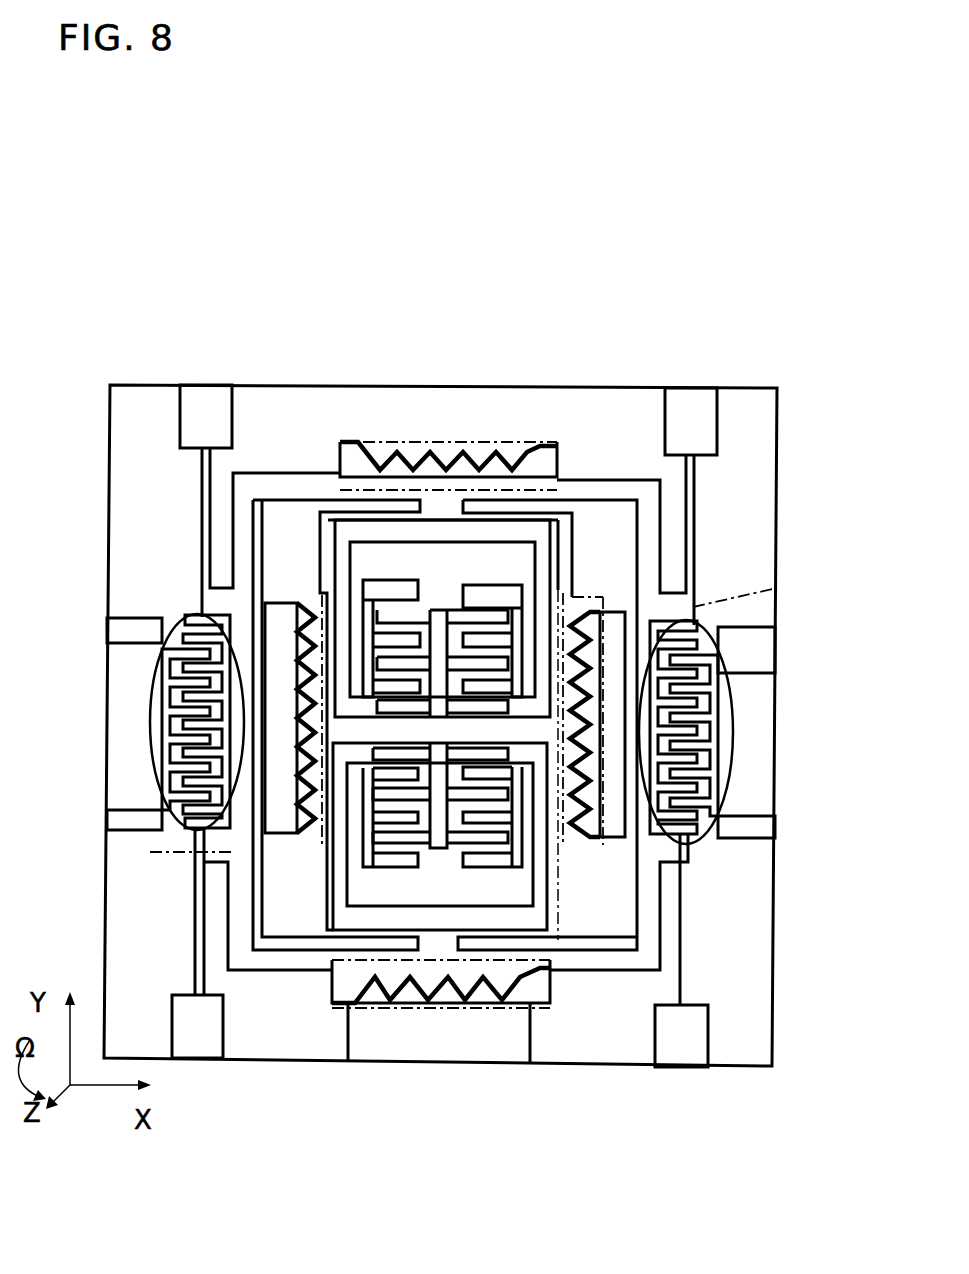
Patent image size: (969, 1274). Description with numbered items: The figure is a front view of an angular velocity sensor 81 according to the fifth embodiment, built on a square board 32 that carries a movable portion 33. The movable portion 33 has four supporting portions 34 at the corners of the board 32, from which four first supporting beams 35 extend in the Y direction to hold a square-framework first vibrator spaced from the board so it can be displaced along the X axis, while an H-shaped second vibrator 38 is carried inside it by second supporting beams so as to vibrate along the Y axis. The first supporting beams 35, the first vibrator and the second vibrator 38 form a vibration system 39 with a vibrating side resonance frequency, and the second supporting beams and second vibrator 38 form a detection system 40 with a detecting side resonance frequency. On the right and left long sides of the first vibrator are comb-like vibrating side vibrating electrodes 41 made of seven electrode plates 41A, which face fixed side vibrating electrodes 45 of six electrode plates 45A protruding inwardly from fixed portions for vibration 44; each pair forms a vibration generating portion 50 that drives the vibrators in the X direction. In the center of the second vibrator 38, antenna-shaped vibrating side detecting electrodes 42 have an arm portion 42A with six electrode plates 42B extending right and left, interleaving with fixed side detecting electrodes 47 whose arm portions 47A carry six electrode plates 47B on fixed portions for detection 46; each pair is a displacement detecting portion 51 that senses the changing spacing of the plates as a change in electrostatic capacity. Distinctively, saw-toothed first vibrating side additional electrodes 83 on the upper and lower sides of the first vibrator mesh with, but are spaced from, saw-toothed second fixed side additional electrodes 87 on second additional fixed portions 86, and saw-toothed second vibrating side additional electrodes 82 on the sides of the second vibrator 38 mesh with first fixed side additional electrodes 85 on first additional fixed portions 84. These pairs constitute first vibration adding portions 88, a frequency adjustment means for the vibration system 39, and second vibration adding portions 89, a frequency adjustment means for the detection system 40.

The board 32 is at (772, 919).
The movable portion 33 is at (198, 533).
The supporting portions 34 is at (686, 407).
The first supporting beams 35 is at (205, 479).
The second vibrator 38 is at (325, 892).
The vibration system 39 is at (664, 515).
The detection system 40 is at (560, 958).
The vibrating side vibrating electrodes 41 is at (200, 617).
The electrode plates 41A is at (170, 780).
The vibrating side detecting electrodes 42 is at (484, 704).
The arm portion 42A is at (445, 612).
The electrode plates 42B is at (505, 612).
The fixed portions for vibration 44 is at (735, 652).
The fixed side vibrating electrodes 45 is at (702, 822).
The electrode plates 45A is at (708, 782).
The fixed portions for detection 46 is at (333, 930).
The fixed side detecting electrodes 47 is at (435, 936).
The arm portions 47A is at (507, 865).
The electrode plates 47B is at (505, 866).
The vibration generating portions 50 is at (152, 722).
The displacement detecting portions 51 is at (380, 580).
The angular velocity sensor 81 is at (745, 350).
The second vibrating side additional electrodes 82 is at (300, 792).
The first vibrating side additional electrodes 83 is at (522, 445).
The first additional fixed portions 84 is at (277, 657).
The first fixed side additional electrodes 85 is at (588, 680).
The second additional fixed portions 86 is at (453, 1003).
The second fixed side additional electrodes 87 is at (483, 443).
The first vibration adding portions 88 is at (150, 854).
The second vibration adding portions 89 is at (344, 440).